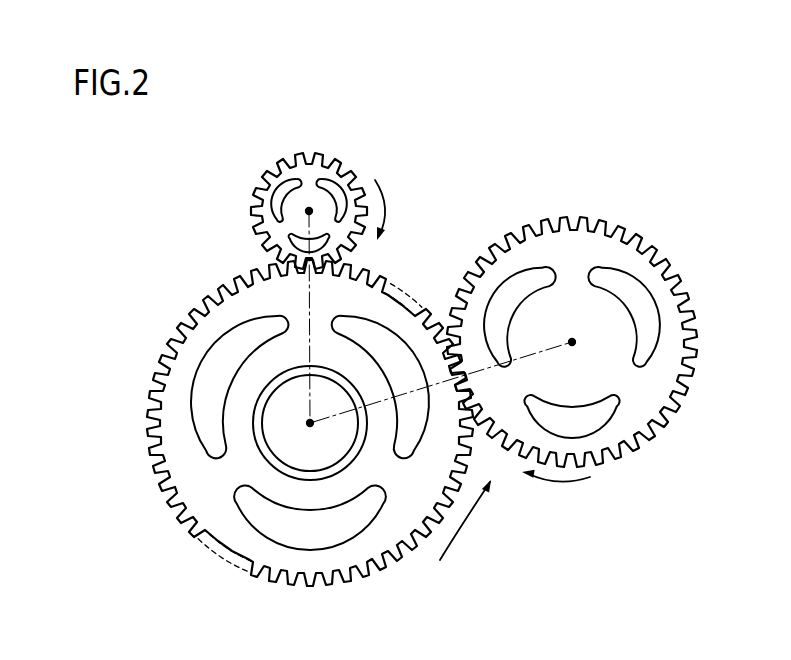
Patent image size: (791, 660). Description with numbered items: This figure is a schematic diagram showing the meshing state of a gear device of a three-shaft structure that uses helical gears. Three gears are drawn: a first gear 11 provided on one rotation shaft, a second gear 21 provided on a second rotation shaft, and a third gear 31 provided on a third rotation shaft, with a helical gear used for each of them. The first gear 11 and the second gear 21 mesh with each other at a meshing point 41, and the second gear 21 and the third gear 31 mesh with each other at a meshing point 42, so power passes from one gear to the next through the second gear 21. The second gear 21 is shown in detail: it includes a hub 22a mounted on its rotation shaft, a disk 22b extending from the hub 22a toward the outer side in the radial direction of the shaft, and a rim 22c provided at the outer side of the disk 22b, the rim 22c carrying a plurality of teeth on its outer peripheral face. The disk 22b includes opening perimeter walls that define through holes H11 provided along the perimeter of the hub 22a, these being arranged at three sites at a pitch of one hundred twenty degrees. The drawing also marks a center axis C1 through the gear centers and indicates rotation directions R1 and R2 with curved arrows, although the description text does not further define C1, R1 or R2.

The first gear 11 is at (341, 176).
The second gear 21 is at (237, 418).
The third gear 31 is at (667, 332).
The meshing point 41 is at (288, 257).
The meshing point 42 is at (470, 388).
The through hole H11 is at (393, 355).
The rotation center axis C1 is at (308, 210).
The hub 22a is at (258, 455).
The disk 22b is at (212, 480).
The rim 22c is at (185, 523).
The rotation direction R1 is at (387, 207).
The rotation direction of third gear R2 is at (568, 483).